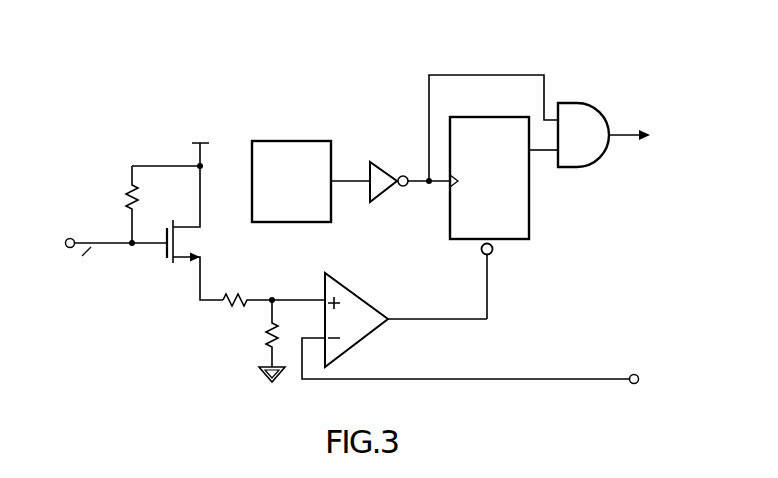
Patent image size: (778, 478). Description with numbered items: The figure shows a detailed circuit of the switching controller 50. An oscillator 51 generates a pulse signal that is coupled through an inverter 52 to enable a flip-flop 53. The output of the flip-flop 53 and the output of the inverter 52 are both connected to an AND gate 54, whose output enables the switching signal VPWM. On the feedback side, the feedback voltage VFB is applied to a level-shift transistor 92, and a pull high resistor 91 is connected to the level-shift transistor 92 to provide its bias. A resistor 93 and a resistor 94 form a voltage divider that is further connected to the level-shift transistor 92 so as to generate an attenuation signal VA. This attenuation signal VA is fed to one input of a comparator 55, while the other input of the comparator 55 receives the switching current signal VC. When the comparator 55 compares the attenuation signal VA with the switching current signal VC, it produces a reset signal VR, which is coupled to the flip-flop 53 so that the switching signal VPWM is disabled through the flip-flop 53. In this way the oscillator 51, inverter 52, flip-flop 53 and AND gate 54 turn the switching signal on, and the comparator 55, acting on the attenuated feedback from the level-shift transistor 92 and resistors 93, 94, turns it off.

The switching controller 50 is at (664, 45).
The oscillator 51 is at (293, 120).
The inverter 52 is at (386, 162).
The flip-flop 53 is at (493, 197).
The AND gate 54 is at (579, 106).
The comparator 55 is at (345, 290).
The pull high resistor 91 is at (123, 195).
The level-shift transistor 92 is at (181, 262).
The resistor 93 is at (233, 291).
The resistor 94 is at (265, 330).